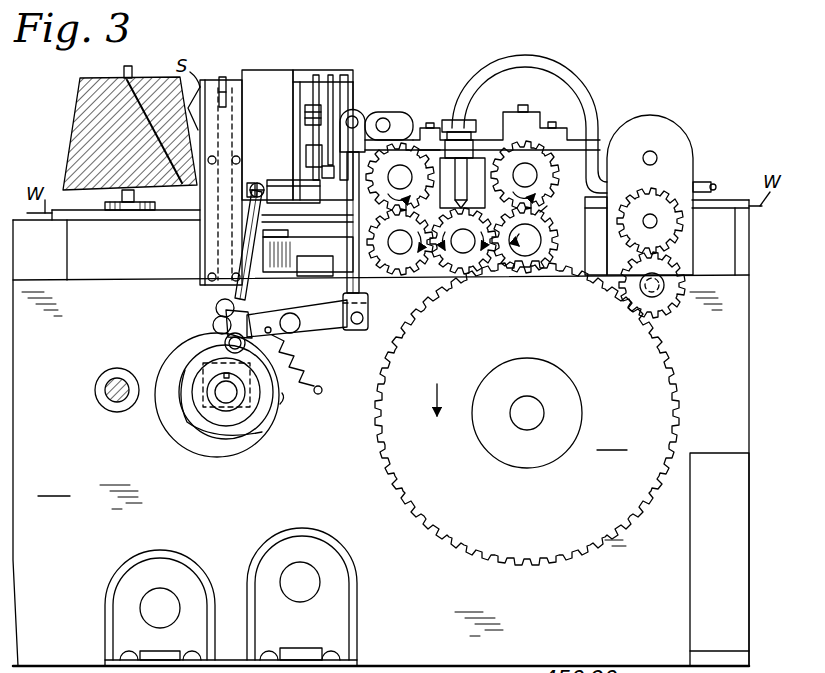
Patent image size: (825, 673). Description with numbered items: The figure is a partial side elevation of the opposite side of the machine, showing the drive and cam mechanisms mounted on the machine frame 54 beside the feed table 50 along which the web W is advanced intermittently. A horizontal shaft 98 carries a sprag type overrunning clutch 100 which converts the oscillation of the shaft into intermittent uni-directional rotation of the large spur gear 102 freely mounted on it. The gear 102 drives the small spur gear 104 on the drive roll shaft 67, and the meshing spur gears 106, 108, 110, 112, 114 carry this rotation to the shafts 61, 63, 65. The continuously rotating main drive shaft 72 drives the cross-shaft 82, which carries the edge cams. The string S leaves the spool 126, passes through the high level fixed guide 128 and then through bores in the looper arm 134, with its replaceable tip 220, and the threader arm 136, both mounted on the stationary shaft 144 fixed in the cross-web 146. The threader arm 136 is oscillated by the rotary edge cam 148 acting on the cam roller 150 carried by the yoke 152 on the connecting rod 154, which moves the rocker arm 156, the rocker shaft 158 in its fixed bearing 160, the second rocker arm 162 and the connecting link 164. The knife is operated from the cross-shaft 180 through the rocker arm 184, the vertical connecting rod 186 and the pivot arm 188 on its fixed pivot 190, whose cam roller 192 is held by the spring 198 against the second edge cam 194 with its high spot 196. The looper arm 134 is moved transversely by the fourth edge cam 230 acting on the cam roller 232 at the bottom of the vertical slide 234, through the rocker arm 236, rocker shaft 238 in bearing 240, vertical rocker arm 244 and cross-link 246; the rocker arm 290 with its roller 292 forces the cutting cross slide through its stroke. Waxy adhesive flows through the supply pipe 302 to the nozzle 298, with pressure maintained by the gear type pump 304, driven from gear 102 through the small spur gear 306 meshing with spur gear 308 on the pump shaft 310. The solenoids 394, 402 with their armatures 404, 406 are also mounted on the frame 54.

The feed table 50 is at (140, 214).
The machine frame 54 is at (54, 483).
The shaft 61 is at (398, 176).
The shaft 63 is at (371, 313).
The shaft 65 is at (525, 163).
The drive roll shaft 67 is at (522, 258).
The main drive shaft 72 is at (99, 395).
The cross-shaft 82 is at (222, 391).
The horizontal shaft 98 is at (527, 410).
The sprag type overrunning clutch 100 is at (533, 458).
The large spur gear 102 is at (527, 413).
The small spur gear 104 is at (530, 257).
The spur gear 106 is at (552, 224).
The spur gear 108 is at (548, 163).
The spur gear 110 is at (453, 256).
The spur gear 112 is at (402, 256).
The spur gear 114 is at (423, 175).
The spool 126 is at (76, 117).
The high level fixed guide 128 is at (200, 87).
The looper arm 134 is at (313, 139).
The threader arm 136 is at (332, 110).
The stationary shaft 144 is at (357, 86).
The cross-web 146 is at (345, 80).
The rotary edge cam 148 is at (248, 414).
The cam roller 150 is at (228, 320).
The yoke 152 is at (203, 372).
The connecting rod 154 is at (243, 296).
The rocker arm 156 is at (322, 174).
The rocker shaft 158 is at (250, 190).
The fixed bearing 160 is at (280, 203).
The second rocker arm 162 is at (330, 174).
The connecting link 164 is at (400, 177).
The cross-shaft 180 is at (389, 124).
The rocker arm 184 is at (376, 116).
The vertical connecting rod 186 is at (350, 288).
The pivot arm 188 is at (330, 330).
The fixed pivot 190 is at (304, 356).
The cam roller 192 is at (215, 320).
The second edge cam 194 is at (225, 345).
The high spot 196 is at (184, 420).
The spring 198 is at (276, 390).
The replaceable tip 220 is at (306, 155).
The fourth edge cam 230 is at (204, 449).
The cam roller 232 is at (218, 303).
The vertical slide 234 is at (216, 244).
The rocker arm 236 is at (224, 78).
The rocker shaft 238 is at (318, 85).
The bearing 240 is at (263, 80).
The vertical rocker arm 244 is at (317, 100).
The cross-link 246 is at (306, 118).
The second rocker arm 290 is at (315, 266).
The roller 292 is at (313, 253).
The nozzle 298 is at (462, 160).
The supply pipe 302 is at (559, 82).
The gear type pump 304 is at (662, 130).
The small spur gear 306 is at (666, 303).
The spur gear 308 is at (667, 232).
The pump shaft 310 is at (657, 157).
The solenoid 394 is at (298, 570).
The solenoid 402 is at (161, 596).
The armature 404 is at (320, 581).
The armature 406 is at (140, 608).